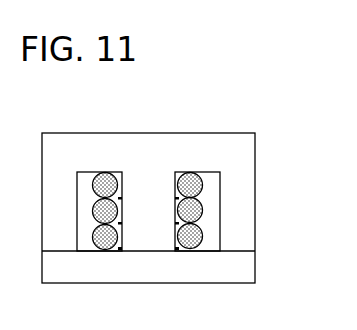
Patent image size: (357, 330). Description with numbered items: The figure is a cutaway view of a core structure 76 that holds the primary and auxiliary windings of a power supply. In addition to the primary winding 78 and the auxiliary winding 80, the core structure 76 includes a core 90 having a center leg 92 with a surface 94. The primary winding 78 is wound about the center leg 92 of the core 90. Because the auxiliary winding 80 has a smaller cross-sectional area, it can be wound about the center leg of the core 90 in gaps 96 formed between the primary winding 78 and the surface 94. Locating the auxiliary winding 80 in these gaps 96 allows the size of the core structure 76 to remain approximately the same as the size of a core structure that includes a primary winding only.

The core structure 76 is at (217, 105).
The primary winding 78 is at (198, 183).
The auxiliary winding 80 is at (118, 252).
The core 90 is at (255, 283).
The center leg 92 is at (146, 180).
The surface 94 is at (112, 178).
The gaps 96 is at (210, 214).